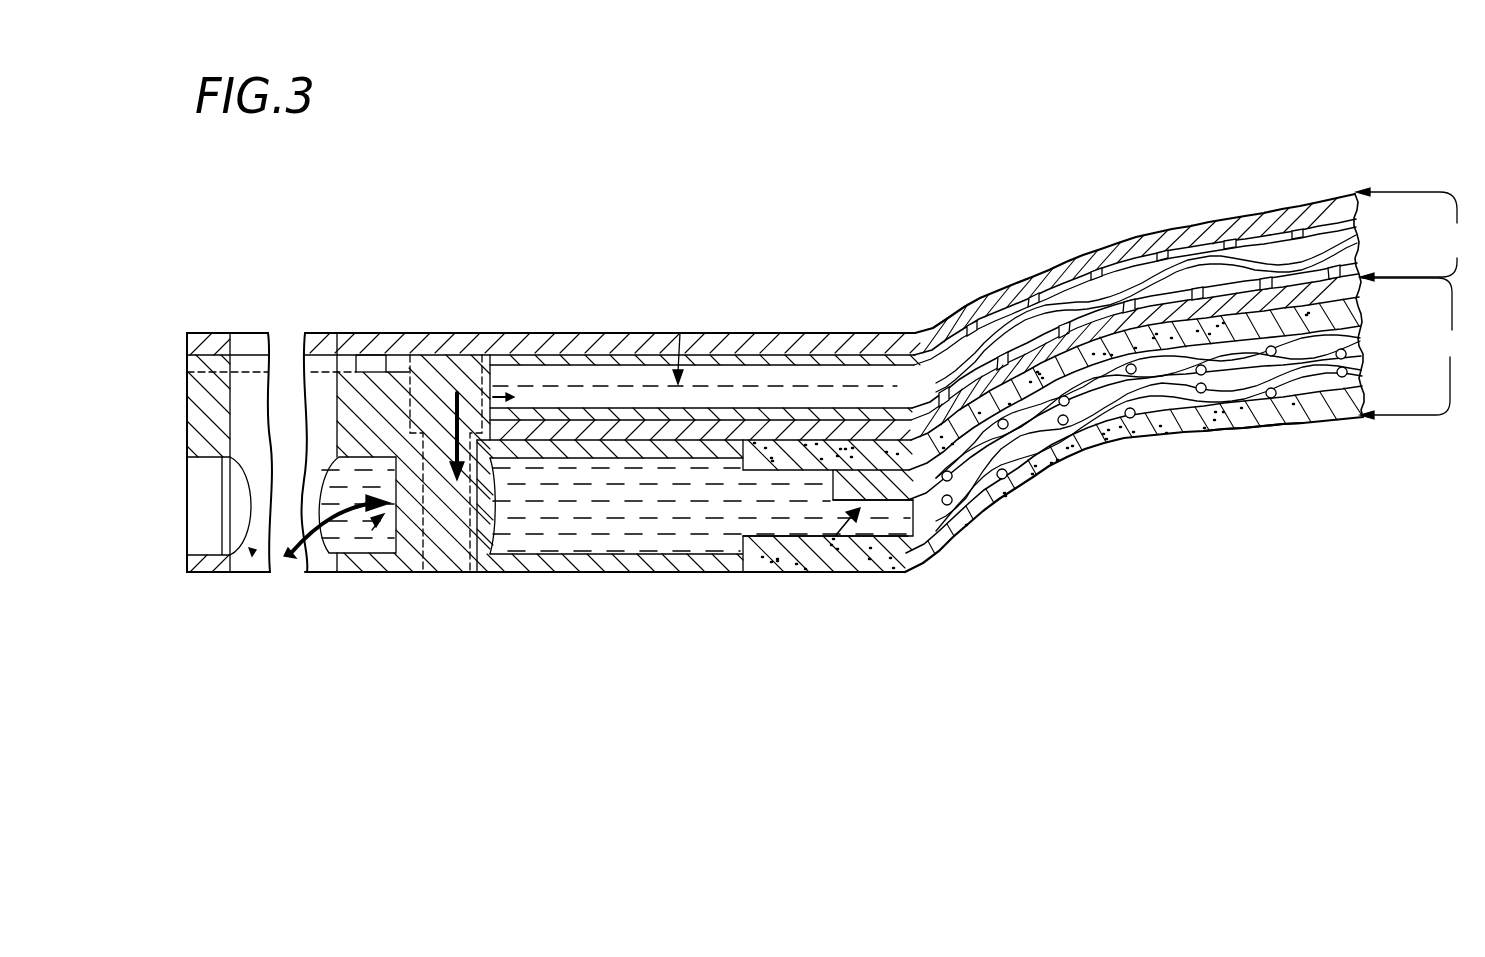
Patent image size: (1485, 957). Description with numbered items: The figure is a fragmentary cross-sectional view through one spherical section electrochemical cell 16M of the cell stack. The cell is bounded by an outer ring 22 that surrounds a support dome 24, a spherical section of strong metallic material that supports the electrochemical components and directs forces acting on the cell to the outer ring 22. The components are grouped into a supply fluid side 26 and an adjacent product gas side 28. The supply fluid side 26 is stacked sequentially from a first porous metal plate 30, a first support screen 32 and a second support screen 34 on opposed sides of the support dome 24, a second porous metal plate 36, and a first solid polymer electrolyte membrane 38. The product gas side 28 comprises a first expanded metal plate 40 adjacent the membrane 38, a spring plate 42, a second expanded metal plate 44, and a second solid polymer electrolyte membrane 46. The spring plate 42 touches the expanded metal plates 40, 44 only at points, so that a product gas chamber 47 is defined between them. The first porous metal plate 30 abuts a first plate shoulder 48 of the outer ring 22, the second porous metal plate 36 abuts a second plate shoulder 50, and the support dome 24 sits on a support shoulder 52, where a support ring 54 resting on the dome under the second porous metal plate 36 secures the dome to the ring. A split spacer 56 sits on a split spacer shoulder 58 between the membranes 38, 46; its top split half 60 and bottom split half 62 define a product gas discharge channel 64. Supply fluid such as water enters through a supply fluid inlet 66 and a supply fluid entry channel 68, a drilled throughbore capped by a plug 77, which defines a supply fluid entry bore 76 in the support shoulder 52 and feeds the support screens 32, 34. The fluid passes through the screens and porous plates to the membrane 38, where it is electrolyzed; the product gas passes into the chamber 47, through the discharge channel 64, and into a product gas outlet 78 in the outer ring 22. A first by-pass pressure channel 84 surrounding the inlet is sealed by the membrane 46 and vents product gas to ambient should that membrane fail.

The spherical section electrochemical cell 16M is at (522, 252).
The outer ring 22 is at (193, 390).
The support dome 24 is at (1362, 367).
The supply fluid side 26 is at (1411, 348).
The product gas side 28 is at (1410, 234).
The first porous metal plate 30 is at (1229, 425).
The first support screen 32 is at (1361, 397).
The second support screen 34 is at (1364, 340).
The second porous metal plate 36 is at (1362, 312).
The first solid polymer electrolyte membrane 38 is at (1362, 287).
The first expanded metal plate 40 is at (1360, 270).
The spring plate 42 is at (1357, 252).
The second expanded metal plate 44 is at (1357, 220).
The second solid polymer electrolyte membrane 46 is at (1292, 205).
The product gas chamber 47 is at (1230, 256).
The first plate shoulder 48 is at (740, 560).
The second plate shoulder 50 is at (742, 468).
The support shoulder 52 is at (930, 500).
The support ring 54 is at (907, 567).
The split spacer 56 is at (680, 333).
The split spacer shoulder 58 is at (545, 425).
The top split half 60 is at (807, 400).
The bottom split half 62 is at (757, 363).
The product gas discharge channel 64 is at (452, 366).
The supply fluid inlet 66 is at (252, 556).
The supply fluid entry channel 68 is at (372, 530).
The supply fluid entry bore 76 is at (836, 535).
The plug 77 is at (200, 522).
The product gas outlet 78 is at (445, 368).
The first by-pass pressure channel 84 is at (372, 333).